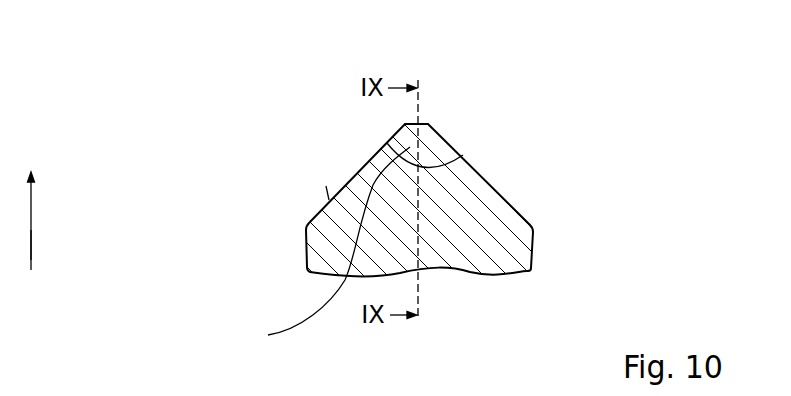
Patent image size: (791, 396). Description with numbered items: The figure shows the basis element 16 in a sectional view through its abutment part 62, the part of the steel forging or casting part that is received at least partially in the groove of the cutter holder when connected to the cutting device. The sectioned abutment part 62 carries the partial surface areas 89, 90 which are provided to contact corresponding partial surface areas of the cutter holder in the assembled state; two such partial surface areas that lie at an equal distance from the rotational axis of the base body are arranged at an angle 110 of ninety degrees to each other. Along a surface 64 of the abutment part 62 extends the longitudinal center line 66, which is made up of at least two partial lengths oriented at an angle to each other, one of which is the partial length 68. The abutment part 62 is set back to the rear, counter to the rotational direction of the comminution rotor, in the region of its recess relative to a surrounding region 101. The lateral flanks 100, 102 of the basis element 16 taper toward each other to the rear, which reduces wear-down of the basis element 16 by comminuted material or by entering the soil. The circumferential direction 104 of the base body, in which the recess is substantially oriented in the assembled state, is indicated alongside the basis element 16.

The basis element 16 is at (481, 190).
The abutment part 62 is at (440, 177).
The surface 64 is at (444, 131).
The longitudinal center line 66 is at (419, 125).
The partial length 68 is at (418, 125).
The partial surface area 89 is at (328, 198).
The partial surface area 90 is at (523, 207).
The lateral flank 100 is at (290, 252).
The surrounding region 101 is at (374, 150).
The lateral flank 102 is at (548, 250).
The circumferential direction 104 is at (31, 218).
The angle 110 is at (314, 250).